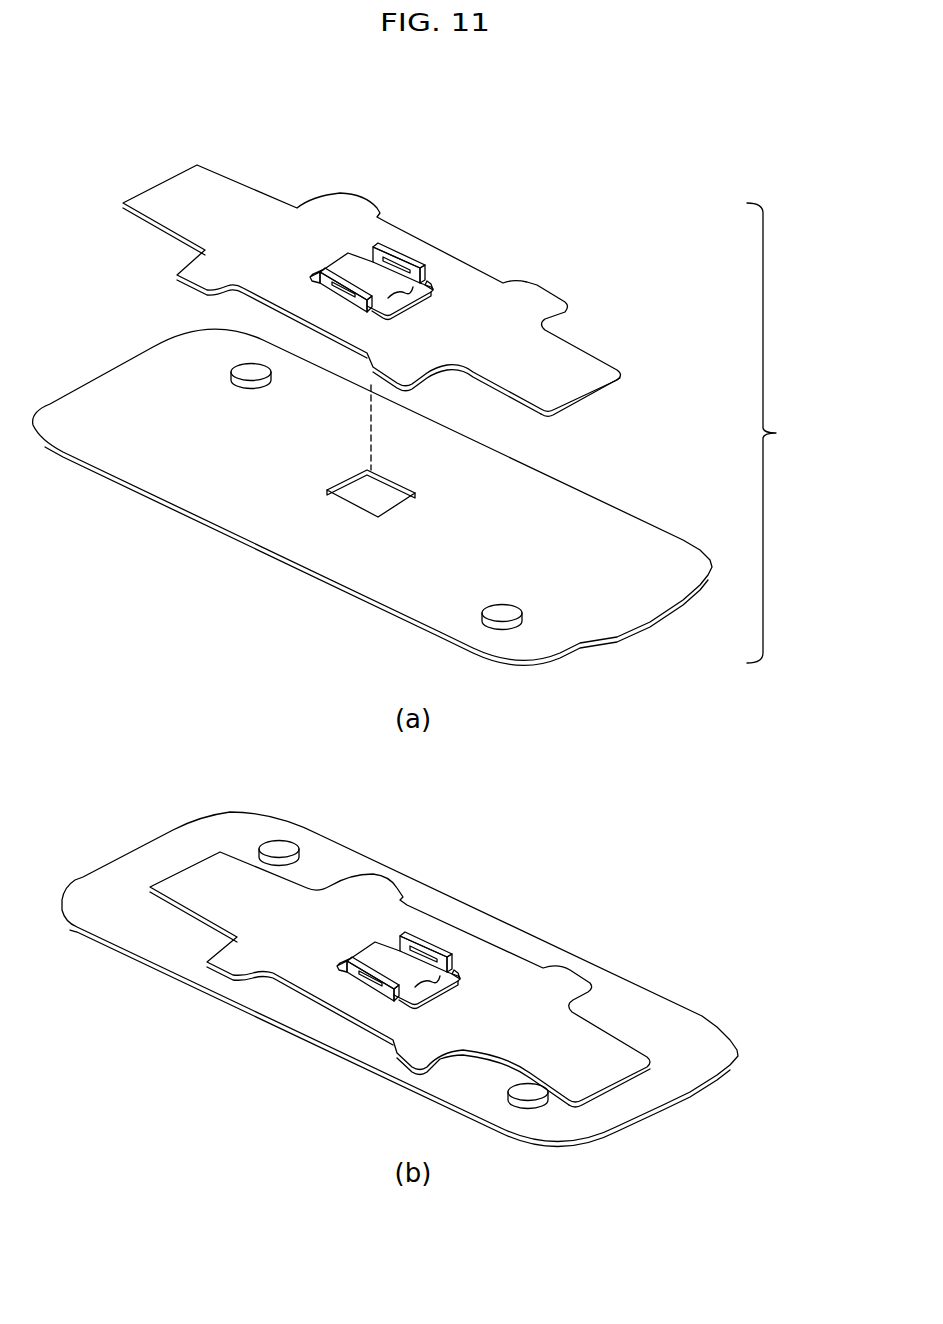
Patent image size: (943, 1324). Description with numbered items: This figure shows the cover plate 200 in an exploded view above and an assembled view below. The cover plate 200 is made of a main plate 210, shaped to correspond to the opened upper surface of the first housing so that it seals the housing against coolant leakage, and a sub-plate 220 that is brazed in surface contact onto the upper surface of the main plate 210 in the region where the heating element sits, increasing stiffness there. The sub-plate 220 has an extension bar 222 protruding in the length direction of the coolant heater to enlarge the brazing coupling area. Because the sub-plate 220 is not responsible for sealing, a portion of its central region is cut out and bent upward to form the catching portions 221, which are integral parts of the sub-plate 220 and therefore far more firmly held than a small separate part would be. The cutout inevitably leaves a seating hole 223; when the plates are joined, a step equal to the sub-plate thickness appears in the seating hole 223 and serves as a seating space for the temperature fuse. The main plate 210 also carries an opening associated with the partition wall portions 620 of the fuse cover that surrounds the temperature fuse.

The cover plate 200 is at (793, 433).
The main plate 210 is at (647, 553).
The sub-plate 220 is at (497, 320).
The catching portions 221 is at (347, 280).
The extension bar 222 is at (303, 243).
The seating hole 223 is at (430, 302).
The partition wall portions 620 is at (323, 477).